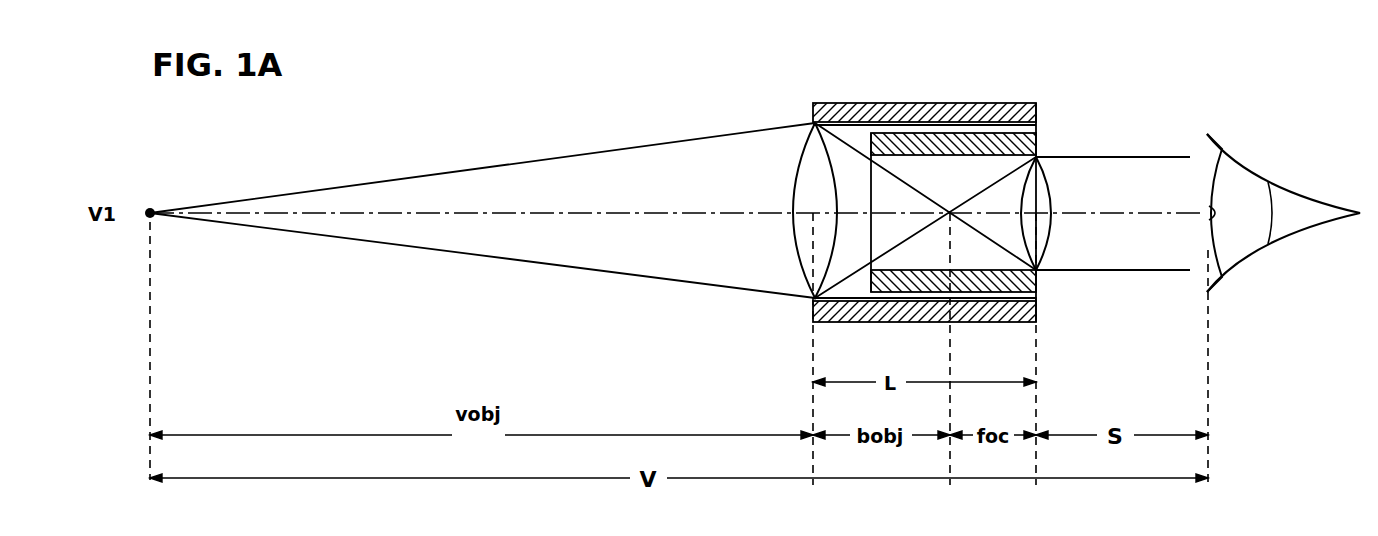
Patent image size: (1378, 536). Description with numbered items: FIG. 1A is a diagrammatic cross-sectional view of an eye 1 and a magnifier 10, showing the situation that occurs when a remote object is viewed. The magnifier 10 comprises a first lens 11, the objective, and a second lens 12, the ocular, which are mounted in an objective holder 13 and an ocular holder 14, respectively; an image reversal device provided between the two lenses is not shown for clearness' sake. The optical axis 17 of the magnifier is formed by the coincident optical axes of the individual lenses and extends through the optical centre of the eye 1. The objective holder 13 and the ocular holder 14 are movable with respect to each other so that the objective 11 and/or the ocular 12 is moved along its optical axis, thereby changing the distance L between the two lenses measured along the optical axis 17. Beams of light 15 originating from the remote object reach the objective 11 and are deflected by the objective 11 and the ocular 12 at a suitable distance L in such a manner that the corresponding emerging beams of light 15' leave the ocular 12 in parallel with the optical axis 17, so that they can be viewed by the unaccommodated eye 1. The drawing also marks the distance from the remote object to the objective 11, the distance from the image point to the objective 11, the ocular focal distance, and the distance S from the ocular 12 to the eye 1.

The eye 1 is at (1300, 150).
The magnifier 10 is at (725, 90).
The first lens 11 is at (798, 168).
The second lens 12 is at (1050, 180).
The objective holder 13 is at (872, 103).
The ocular holder 14 is at (1038, 137).
The beams of light 15 is at (482, 206).
The emerging beams of light 15' is at (1113, 205).
The optical axis 17 is at (498, 213).